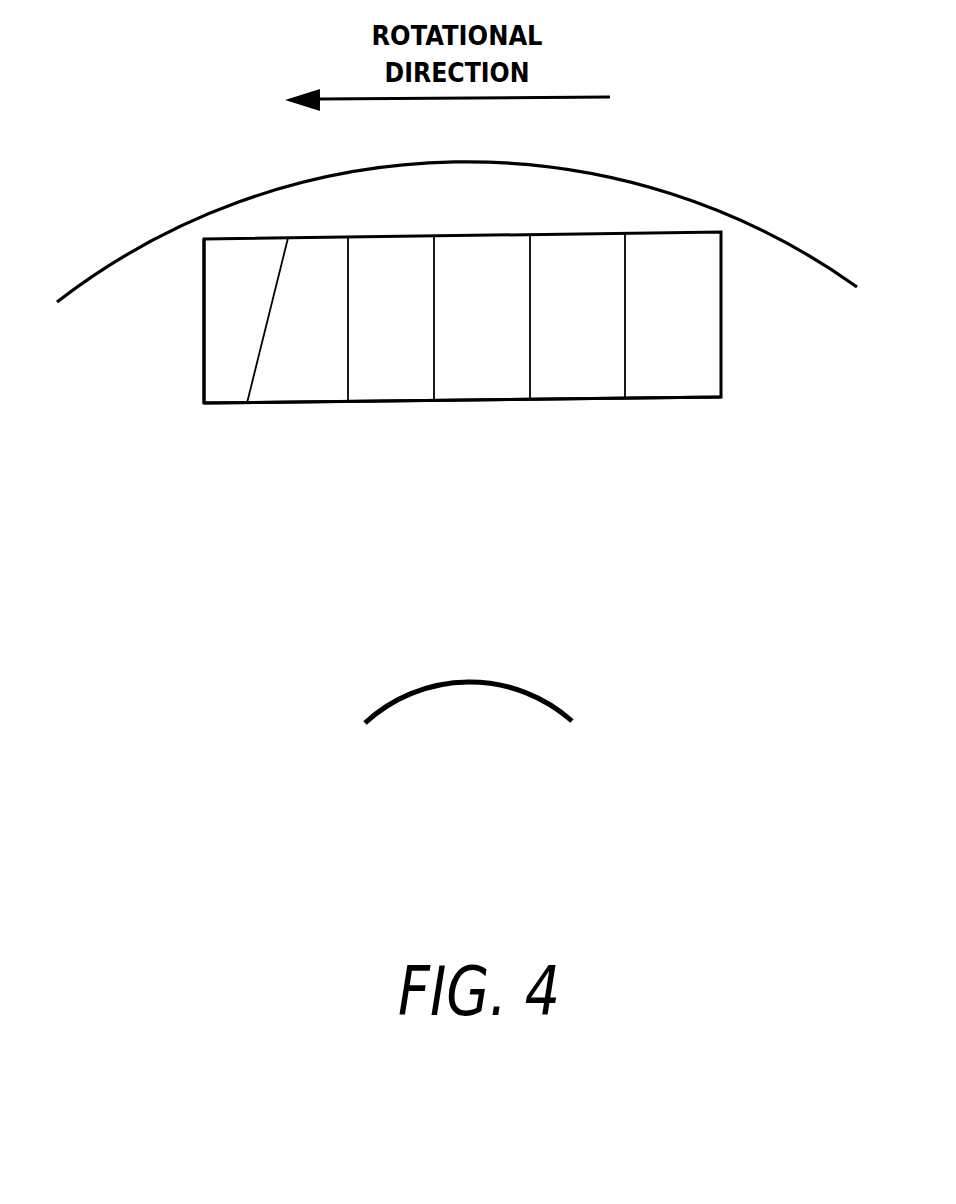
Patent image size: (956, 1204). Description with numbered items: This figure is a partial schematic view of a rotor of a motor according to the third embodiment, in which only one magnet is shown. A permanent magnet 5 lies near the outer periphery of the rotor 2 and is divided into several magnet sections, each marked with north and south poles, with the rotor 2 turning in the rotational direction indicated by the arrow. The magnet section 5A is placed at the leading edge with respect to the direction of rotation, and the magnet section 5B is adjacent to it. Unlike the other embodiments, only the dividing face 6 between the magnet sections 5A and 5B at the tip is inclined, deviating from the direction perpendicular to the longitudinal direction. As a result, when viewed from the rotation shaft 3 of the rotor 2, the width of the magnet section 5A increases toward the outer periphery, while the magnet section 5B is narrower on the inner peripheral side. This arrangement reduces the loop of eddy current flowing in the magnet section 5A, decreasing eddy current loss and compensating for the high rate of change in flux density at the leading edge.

The rotor 2 is at (765, 230).
The rotation shaft 3 is at (513, 688).
The permanent magnet 5 is at (662, 232).
The magnet section 5A is at (204, 367).
The magnet section 5B is at (335, 404).
The dividing face 6 is at (257, 365).